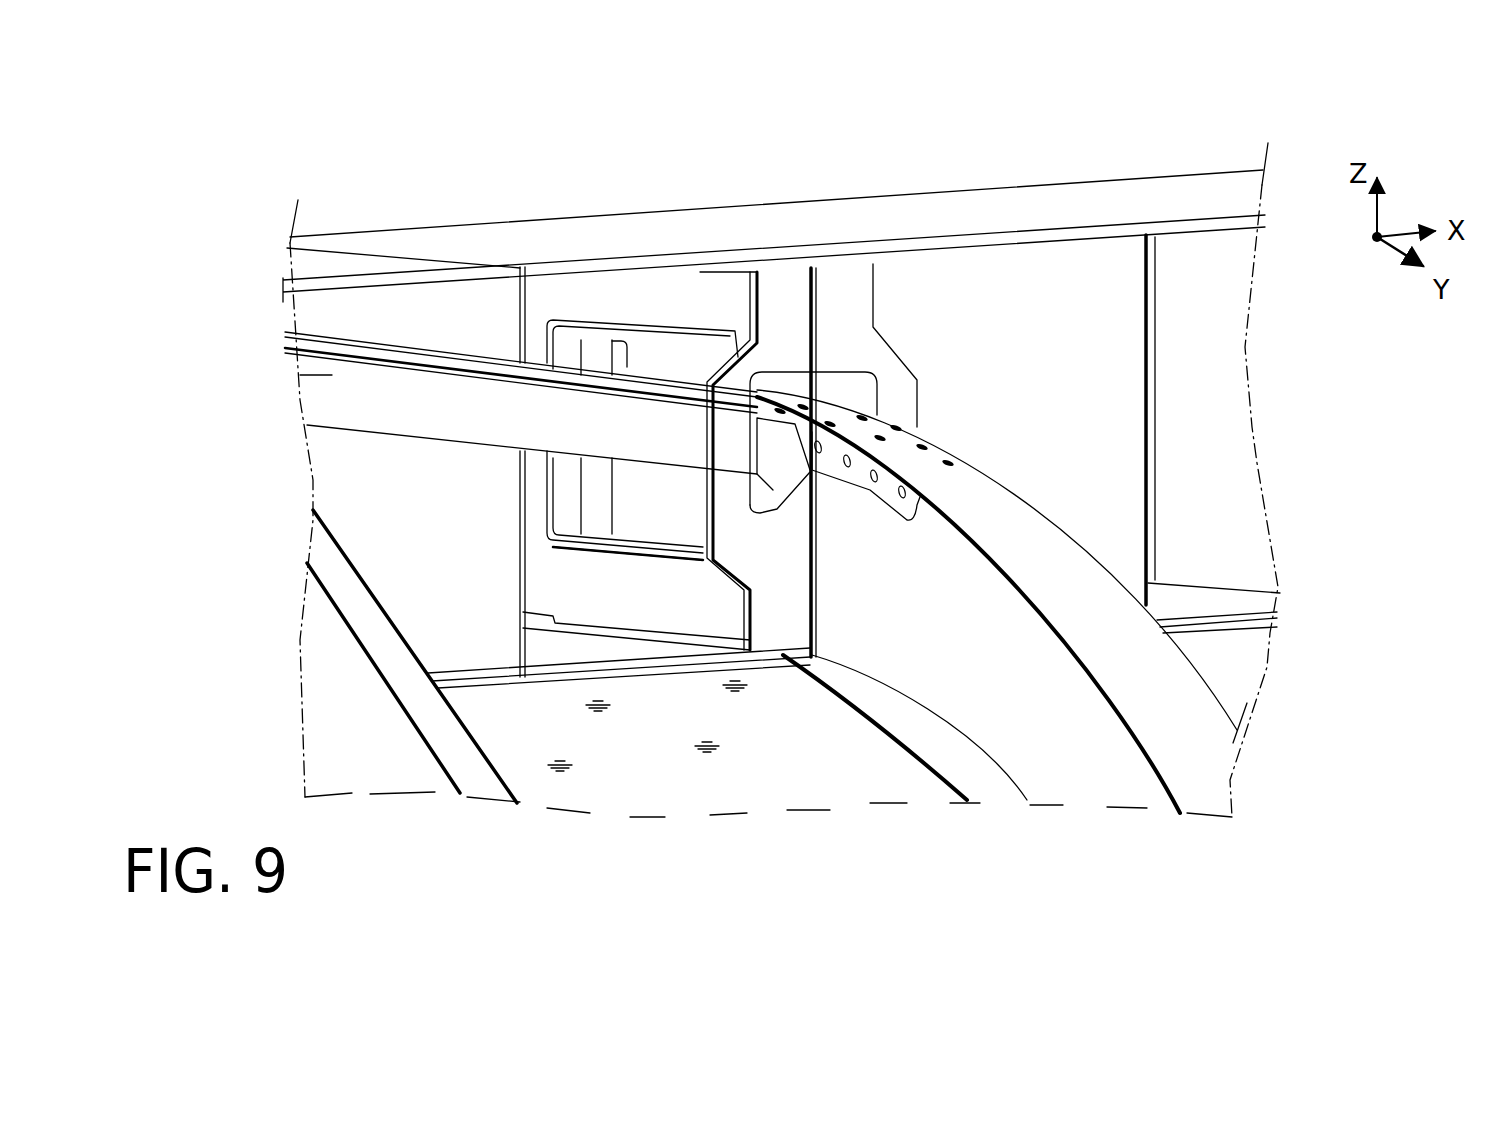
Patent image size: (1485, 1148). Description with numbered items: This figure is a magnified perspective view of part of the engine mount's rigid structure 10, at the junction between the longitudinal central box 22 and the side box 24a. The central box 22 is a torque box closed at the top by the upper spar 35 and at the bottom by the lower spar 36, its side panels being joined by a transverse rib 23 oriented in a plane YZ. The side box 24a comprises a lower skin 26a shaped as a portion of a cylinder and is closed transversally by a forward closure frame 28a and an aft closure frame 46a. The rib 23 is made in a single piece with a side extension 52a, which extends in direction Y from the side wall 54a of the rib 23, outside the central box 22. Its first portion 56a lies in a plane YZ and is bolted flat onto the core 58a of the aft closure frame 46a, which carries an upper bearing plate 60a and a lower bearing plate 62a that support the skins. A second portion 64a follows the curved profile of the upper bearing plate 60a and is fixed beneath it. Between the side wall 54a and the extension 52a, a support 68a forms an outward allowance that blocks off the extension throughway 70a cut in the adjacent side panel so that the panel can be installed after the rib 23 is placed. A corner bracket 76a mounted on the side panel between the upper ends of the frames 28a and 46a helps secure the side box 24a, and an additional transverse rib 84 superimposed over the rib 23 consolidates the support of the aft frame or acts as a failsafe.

The rigid structure 10 is at (518, 203).
The longitudinal central box 22 is at (880, 188).
The transverse rib 23 is at (663, 603).
The side box 24a is at (444, 772).
The lower skin 26a is at (593, 784).
The forward closure frame 28a is at (395, 647).
The upper spar 35 is at (663, 233).
The lower spar 36 is at (1213, 633).
The aft closure frame 46a is at (1055, 742).
The side extension 52a is at (840, 478).
The side wall 54a is at (830, 475).
The first portion 56a is at (862, 494).
The core 58a is at (1123, 787).
The upper bearing plate 60a is at (1207, 732).
The lower bearing plate 62a is at (987, 786).
The second portion 64a is at (807, 413).
The support for side extension 68a is at (773, 463).
The extension throughway 70a is at (765, 510).
The corner bracket 76a is at (330, 375).
The additional transverse rib 84 is at (838, 296).